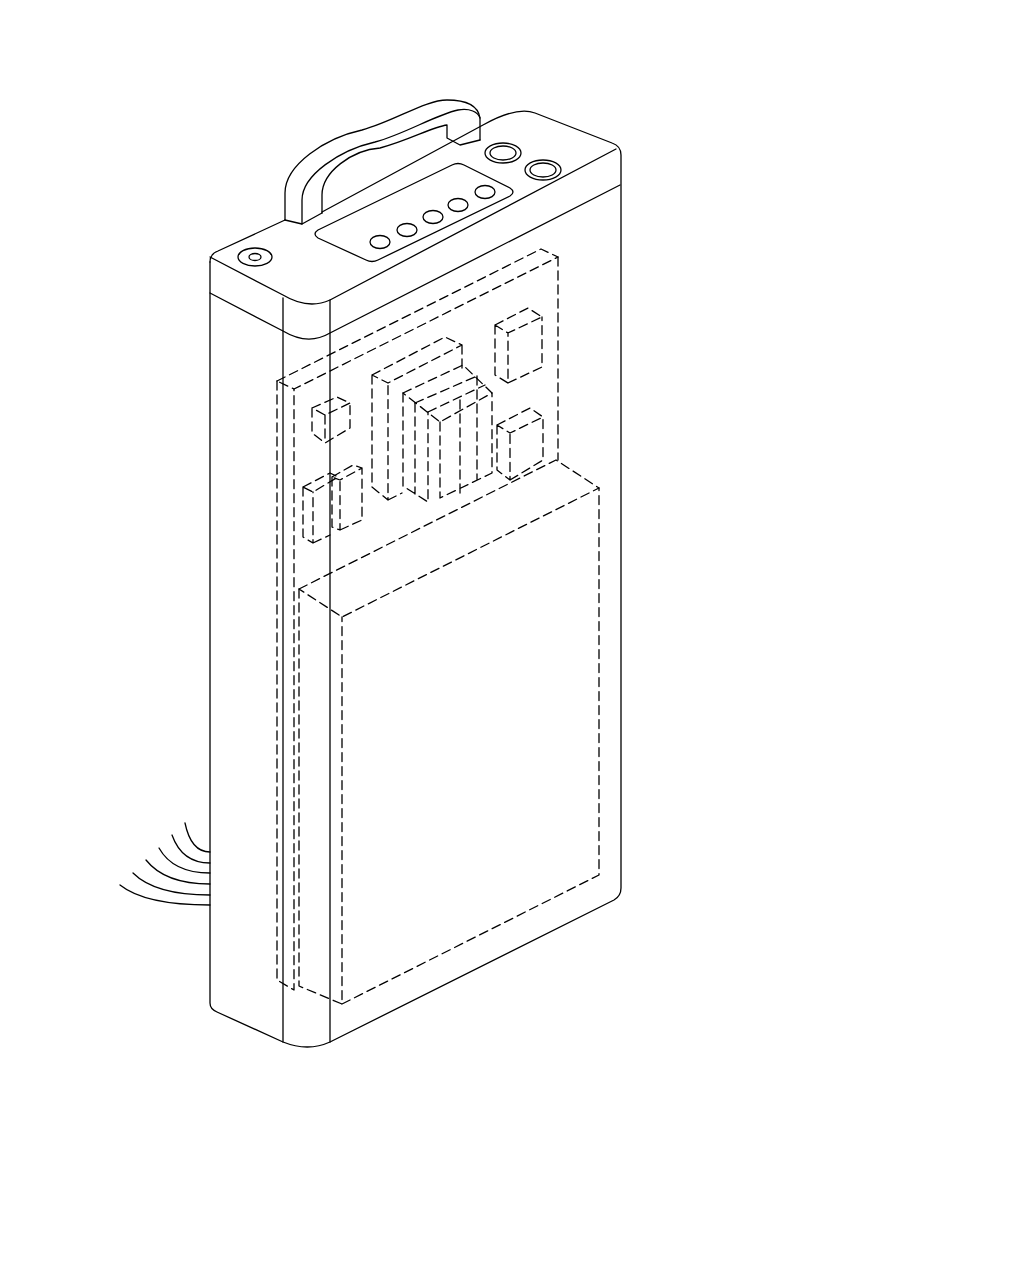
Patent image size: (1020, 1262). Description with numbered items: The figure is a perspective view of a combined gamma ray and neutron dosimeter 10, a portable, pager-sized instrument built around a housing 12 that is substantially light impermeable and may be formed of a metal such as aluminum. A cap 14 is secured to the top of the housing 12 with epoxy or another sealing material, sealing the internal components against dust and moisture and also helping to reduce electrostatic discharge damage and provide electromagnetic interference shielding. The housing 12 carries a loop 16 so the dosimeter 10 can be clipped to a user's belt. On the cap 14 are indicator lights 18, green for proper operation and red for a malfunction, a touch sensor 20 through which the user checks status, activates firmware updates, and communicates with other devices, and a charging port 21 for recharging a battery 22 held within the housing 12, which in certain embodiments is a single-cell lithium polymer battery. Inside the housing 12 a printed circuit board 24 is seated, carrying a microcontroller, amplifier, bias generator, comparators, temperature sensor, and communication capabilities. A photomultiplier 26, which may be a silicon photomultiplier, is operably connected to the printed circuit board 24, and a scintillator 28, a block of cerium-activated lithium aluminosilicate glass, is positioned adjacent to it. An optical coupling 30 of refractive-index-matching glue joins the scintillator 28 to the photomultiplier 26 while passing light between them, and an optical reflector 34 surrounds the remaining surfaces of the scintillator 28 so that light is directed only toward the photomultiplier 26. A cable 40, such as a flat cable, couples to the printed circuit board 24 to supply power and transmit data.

The combined gamma ray and neutron dosimeter 10 is at (676, 183).
The housing 12 is at (622, 395).
The cap 14 is at (600, 147).
The loop 16 is at (364, 131).
The indicator lights 18 is at (510, 152).
The touch sensor 20 is at (347, 224).
The charging port 21 is at (254, 256).
The battery 22 is at (493, 815).
The printed circuit board 24 is at (558, 285).
The photomultiplier 26 is at (376, 390).
The scintillator 28 is at (412, 497).
The optical coupling 30 is at (402, 431).
The optical reflector 34 is at (460, 497).
The cable 40 is at (148, 897).